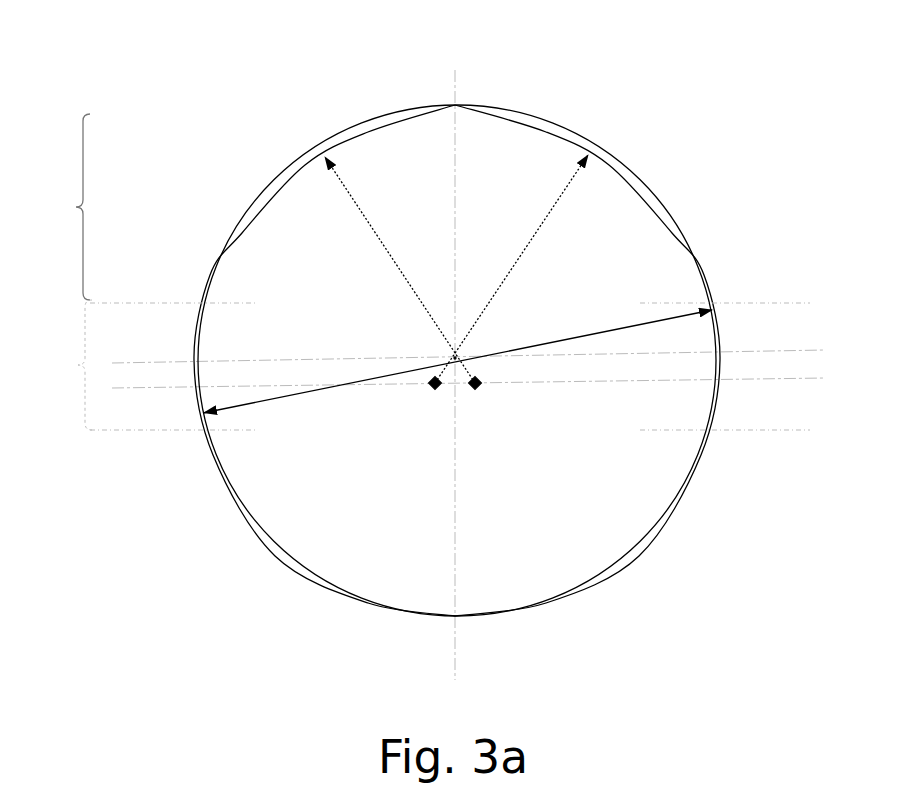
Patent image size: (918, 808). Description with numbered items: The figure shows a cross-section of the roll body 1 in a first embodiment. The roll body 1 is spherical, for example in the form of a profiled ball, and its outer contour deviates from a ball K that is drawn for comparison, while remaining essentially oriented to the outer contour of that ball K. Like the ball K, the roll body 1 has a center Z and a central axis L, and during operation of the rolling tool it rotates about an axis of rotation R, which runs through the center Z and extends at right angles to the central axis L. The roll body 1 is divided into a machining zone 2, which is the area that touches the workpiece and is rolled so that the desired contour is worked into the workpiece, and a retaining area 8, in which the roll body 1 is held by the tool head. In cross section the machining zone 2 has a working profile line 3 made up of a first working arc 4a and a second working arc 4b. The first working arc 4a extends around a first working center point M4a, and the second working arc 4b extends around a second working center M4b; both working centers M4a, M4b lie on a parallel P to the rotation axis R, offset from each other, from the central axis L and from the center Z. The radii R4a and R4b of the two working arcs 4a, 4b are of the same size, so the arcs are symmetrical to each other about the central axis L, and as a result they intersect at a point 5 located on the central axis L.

The roll body 1 is at (206, 86).
The machining zone 2 is at (70, 207).
The working profile line 3 is at (487, 360).
The first working arc 4a is at (260, 205).
The second working arc 4b is at (694, 250).
The point 5 is at (458, 101).
The retaining area 8 is at (432, 365).
The ball K is at (625, 160).
The radius of the first working arc R4a is at (400, 270).
The radius of the second working arc R4b is at (511, 269).
The first working center point M4a is at (495, 401).
The second working center M4b is at (414, 401).
The center Z is at (450, 357).
The axis of rotation R is at (479, 350).
The parallel to the rotation axis P is at (479, 380).
The central axis L is at (460, 392).